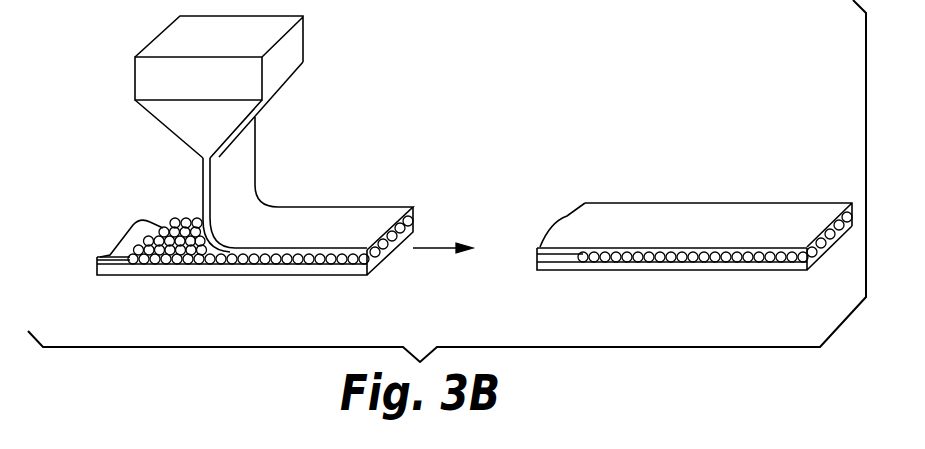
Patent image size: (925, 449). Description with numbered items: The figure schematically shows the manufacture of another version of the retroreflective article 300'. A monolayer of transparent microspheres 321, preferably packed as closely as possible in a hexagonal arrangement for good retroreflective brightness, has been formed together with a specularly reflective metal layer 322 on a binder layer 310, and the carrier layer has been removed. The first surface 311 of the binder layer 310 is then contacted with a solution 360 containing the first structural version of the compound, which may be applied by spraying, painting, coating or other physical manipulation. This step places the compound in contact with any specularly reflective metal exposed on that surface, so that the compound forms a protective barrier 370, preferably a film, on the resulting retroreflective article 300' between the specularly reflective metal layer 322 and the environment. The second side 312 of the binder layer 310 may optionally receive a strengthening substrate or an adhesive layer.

The retroreflective article 300' is at (742, 97).
The binder layer 310 is at (217, 267).
The first surface 311 is at (542, 250).
The second side 312 is at (97, 257).
The transparent microspheres 321 is at (190, 222).
The specularly reflective metal layer 322 is at (120, 250).
The solution 360 is at (238, 153).
The protective barrier 370 is at (758, 210).